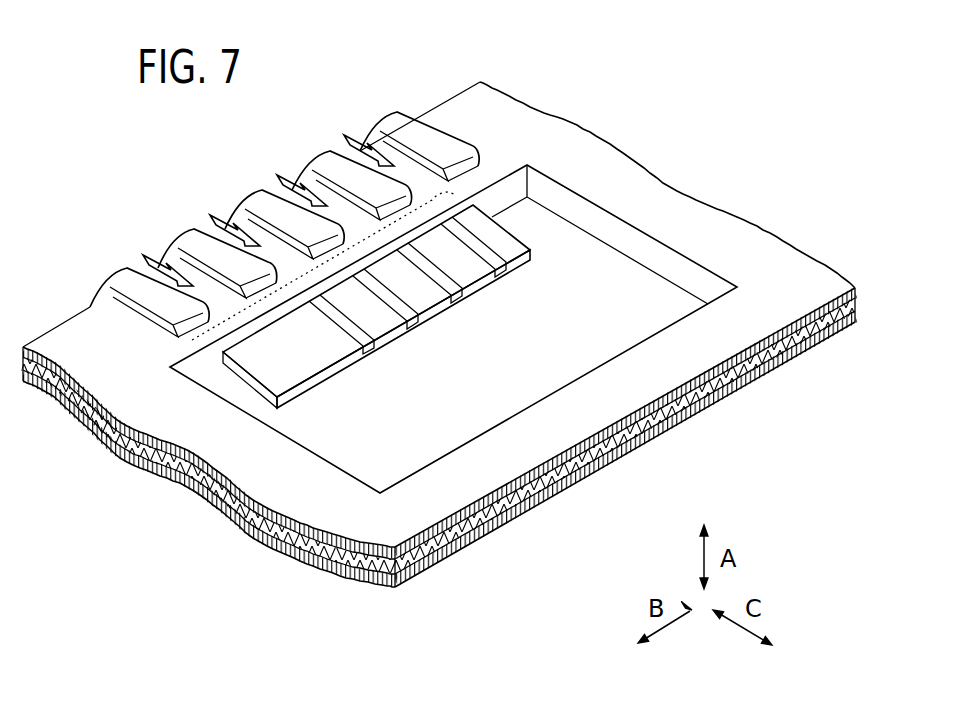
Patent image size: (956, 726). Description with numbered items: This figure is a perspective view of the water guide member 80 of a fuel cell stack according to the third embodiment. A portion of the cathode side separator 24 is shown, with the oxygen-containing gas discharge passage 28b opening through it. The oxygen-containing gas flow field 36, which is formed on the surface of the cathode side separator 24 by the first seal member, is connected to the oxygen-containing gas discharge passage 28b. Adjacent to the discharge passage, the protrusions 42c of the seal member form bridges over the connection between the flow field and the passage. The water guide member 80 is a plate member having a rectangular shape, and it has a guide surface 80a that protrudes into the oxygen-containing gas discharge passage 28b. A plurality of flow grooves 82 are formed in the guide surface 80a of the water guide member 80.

The cathode side separator 24 is at (180, 133).
The oxygen-containing gas discharge passage 28b is at (662, 300).
The oxygen-containing gas flow field 36 is at (153, 258).
The protrusions 42c is at (408, 118).
The water guide member 80 is at (461, 326).
The guide surface 80a is at (383, 327).
The flow grooves 82 is at (441, 281).